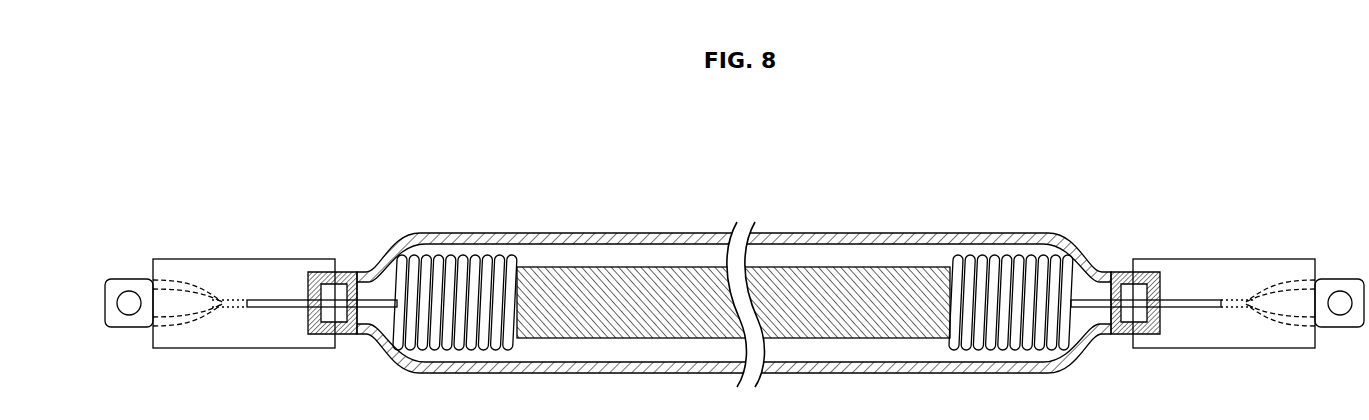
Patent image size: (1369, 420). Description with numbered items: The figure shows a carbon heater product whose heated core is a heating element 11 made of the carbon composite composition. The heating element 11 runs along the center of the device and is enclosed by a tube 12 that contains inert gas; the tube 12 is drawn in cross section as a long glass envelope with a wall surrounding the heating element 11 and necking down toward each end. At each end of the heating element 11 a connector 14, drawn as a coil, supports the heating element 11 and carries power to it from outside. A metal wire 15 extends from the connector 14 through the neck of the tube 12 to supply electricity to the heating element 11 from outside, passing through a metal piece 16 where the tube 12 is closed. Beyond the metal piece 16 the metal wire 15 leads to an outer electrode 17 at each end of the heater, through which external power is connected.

The heating element 11 is at (875, 297).
The tube 12 is at (930, 240).
The connector 14 is at (1015, 265).
The metal wire 15 is at (1093, 302).
The metal piece 16 is at (1138, 282).
The outer electrode 17 is at (1185, 262).